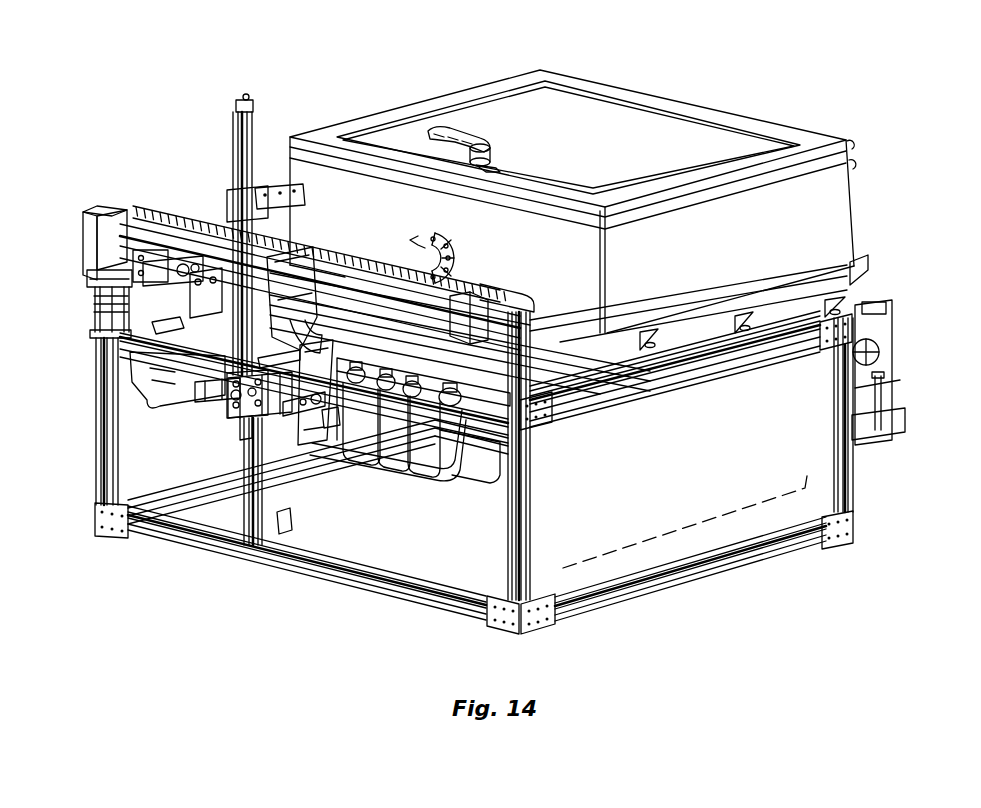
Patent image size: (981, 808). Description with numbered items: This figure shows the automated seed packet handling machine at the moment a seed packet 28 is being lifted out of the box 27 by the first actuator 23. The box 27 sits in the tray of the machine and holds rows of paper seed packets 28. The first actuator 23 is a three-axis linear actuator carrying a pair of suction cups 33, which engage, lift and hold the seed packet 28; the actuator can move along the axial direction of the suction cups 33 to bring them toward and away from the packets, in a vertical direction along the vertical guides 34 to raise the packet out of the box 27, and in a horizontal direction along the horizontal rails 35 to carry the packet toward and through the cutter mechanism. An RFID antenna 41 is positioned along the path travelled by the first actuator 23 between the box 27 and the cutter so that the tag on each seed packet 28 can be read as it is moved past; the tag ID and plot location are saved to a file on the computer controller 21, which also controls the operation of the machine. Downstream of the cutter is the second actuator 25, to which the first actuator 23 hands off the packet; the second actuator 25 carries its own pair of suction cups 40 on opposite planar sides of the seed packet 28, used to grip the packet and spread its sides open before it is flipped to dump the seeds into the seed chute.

The computer controller 21 is at (399, 110).
The first actuator 23 is at (233, 405).
The second actuator 25 is at (200, 283).
The box 27 is at (345, 465).
The seed packet 28 is at (205, 300).
The suction cups 33 is at (326, 388).
The vertical guides 34 is at (230, 215).
The horizontal rails 35 is at (168, 211).
The suction cups 40 is at (100, 340).
The RFID antenna 41 is at (287, 307).